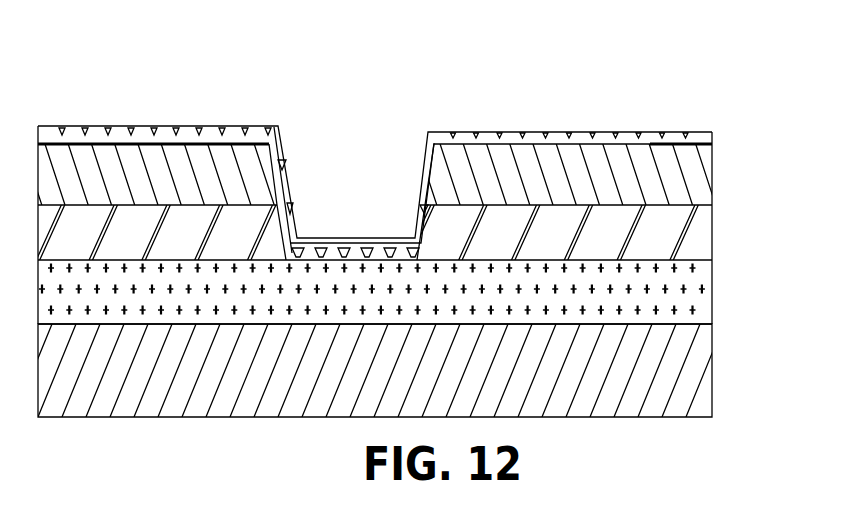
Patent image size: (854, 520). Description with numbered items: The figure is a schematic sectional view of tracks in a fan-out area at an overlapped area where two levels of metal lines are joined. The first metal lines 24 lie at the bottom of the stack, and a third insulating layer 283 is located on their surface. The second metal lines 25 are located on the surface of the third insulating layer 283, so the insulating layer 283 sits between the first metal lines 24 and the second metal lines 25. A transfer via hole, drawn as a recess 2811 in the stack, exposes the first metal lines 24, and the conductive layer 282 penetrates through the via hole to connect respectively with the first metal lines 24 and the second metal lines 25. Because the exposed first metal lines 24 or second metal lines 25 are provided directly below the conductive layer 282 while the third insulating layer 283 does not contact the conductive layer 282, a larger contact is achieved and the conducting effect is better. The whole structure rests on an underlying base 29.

The recess / opening 2811 is at (343, 210).
The conductive layer 282 is at (658, 133).
The second metal lines 25 is at (653, 168).
The third insulating layer 283 is at (647, 230).
The first metal lines 24 is at (667, 290).
The substrate 29 is at (677, 378).